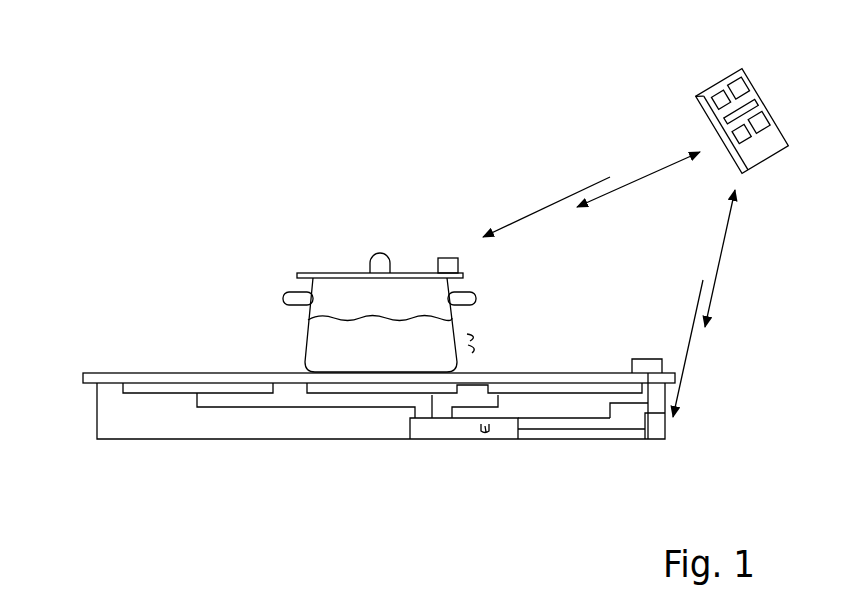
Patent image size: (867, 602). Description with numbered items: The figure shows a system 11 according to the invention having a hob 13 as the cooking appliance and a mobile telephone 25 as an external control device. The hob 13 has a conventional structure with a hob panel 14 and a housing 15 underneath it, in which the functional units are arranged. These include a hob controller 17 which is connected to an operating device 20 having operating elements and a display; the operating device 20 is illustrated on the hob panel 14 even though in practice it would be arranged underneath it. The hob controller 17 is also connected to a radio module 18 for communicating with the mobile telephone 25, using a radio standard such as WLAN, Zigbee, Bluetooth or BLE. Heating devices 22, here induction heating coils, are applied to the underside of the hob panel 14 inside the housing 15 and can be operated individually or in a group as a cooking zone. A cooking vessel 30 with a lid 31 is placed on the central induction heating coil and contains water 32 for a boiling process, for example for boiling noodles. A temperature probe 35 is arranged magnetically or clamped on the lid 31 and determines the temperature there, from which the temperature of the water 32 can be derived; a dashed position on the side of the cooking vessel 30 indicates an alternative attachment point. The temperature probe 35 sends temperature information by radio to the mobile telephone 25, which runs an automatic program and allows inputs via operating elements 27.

The system 11 is at (161, 172).
The hob 13 is at (353, 367).
The hob panel 14 is at (95, 373).
The housing 15 is at (112, 440).
The hob controller 17 is at (447, 425).
The radio module 18 is at (657, 428).
The operating device 20 is at (647, 359).
The heating devices 22 is at (177, 392).
The mobile telephone 25 is at (680, 117).
The operating elements 27 is at (720, 156).
The cooking vessel 30 is at (308, 322).
The lid 31 is at (340, 273).
The water 32 is at (369, 355).
The temperature probe 35 is at (447, 258).